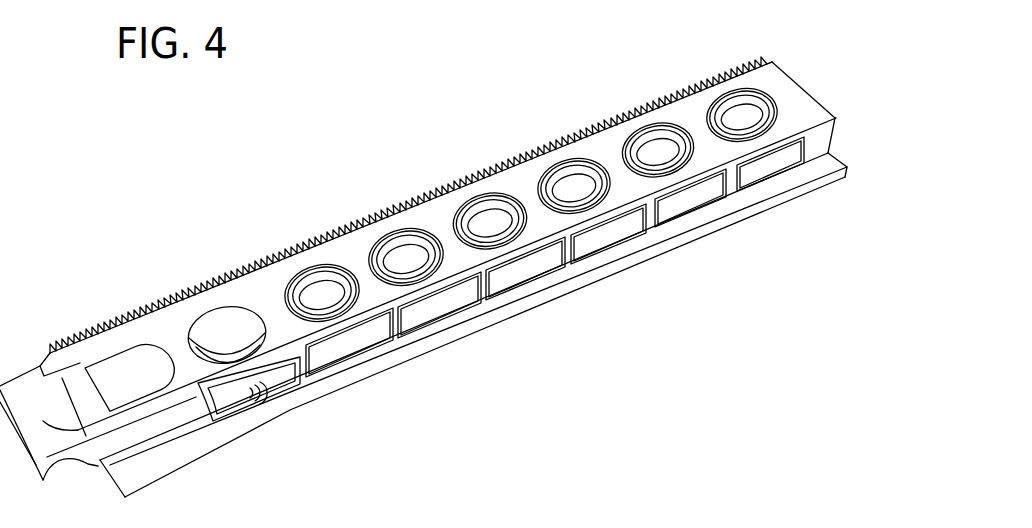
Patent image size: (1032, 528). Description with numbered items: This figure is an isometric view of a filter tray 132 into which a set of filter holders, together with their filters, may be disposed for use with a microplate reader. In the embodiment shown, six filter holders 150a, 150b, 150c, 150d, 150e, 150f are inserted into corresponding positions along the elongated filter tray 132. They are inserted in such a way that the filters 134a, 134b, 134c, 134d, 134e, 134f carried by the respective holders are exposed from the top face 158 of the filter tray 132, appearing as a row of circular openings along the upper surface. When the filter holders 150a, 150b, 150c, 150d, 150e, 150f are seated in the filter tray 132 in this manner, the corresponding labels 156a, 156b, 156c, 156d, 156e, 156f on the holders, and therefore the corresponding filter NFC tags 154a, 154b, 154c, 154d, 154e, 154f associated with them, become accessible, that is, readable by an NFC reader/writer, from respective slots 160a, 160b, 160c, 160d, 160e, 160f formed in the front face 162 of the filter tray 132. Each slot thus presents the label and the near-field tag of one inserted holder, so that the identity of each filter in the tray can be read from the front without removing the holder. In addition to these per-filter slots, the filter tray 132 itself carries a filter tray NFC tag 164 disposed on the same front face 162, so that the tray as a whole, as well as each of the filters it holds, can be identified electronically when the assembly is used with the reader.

The filter tray 132 is at (118, 156).
The filter 134a is at (320, 290).
The filter 134b is at (404, 256).
The filter 134c is at (488, 220).
The filter 134d is at (572, 185).
The filter 134e is at (656, 150).
The filter 134f is at (740, 115).
The filter holder 150a is at (286, 290).
The filter holder 150b is at (370, 254).
The filter holder 150c is at (454, 220).
The filter holder 150d is at (538, 185).
The filter holder 150e is at (622, 150).
The filter holder 150f is at (707, 115).
The filter NFC tag 154a is at (340, 365).
The filter NFC tag 154b is at (433, 317).
The filter NFC tag 154c is at (518, 283).
The filter NFC tag 154d is at (607, 257).
The filter NFC tag 154e is at (688, 215).
The filter NFC tag 154f is at (763, 180).
The label 156a is at (370, 437).
The label 156b is at (465, 390).
The label 156c is at (552, 353).
The label 156d is at (673, 357).
The label 156e is at (752, 323).
The label 156f is at (797, 283).
The top face 158 is at (213, 290).
The slot 160a is at (370, 355).
The slot 160b is at (467, 312).
The slot 160c is at (552, 273).
The slot 160d is at (635, 247).
The slot 160e is at (717, 203).
The slot 160f is at (793, 168).
The front face 162 is at (153, 423).
The filter tray NFC tag 164 is at (233, 402).